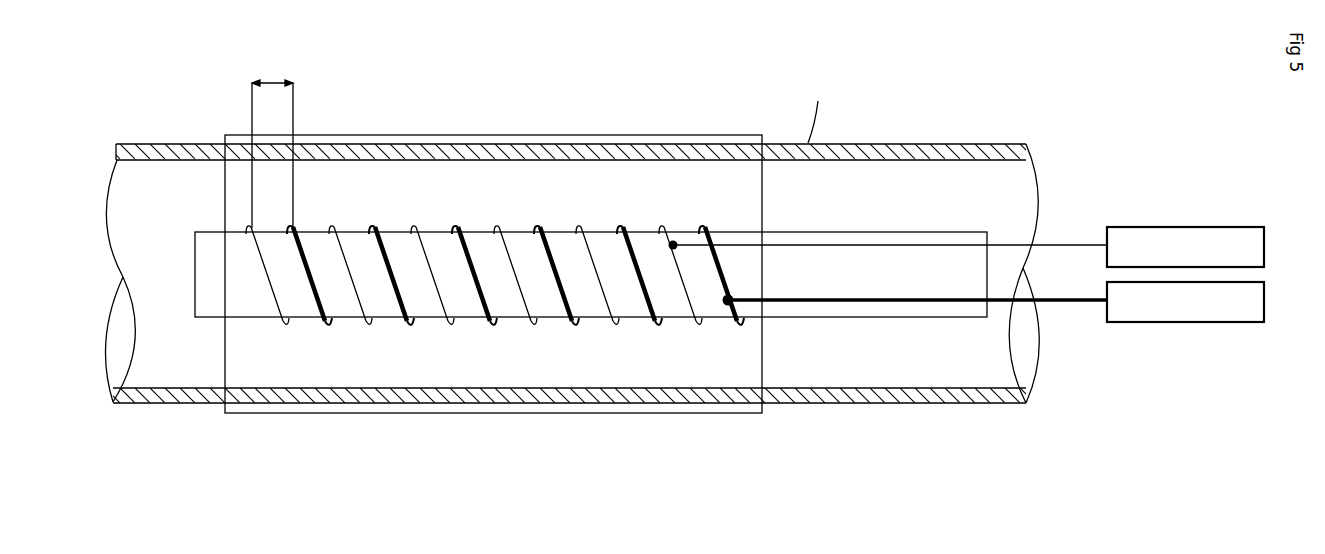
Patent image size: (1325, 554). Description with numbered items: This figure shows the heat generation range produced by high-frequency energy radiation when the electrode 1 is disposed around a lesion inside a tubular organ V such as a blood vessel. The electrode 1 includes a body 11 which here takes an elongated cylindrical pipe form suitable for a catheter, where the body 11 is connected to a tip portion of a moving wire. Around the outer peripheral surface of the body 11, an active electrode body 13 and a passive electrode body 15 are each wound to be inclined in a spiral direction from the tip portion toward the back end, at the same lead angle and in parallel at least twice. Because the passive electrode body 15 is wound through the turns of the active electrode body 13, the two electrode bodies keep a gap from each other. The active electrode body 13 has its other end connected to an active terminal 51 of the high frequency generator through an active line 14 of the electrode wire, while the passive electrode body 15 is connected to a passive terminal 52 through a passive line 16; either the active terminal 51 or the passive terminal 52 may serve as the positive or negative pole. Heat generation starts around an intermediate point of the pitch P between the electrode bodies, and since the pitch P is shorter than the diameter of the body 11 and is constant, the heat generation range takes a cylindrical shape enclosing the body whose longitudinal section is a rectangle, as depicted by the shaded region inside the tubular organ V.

The electrode 1 is at (855, 141).
The body 11 is at (210, 228).
The active electrode body 13 is at (266, 272).
The active line 14 is at (1070, 243).
The passive electrode body 15 is at (310, 277).
The passive line 16 is at (1068, 302).
The active terminal 51 is at (1188, 227).
The passive terminal 52 is at (1185, 322).
The pitch P is at (272, 144).
The tubular organ V is at (816, 111).